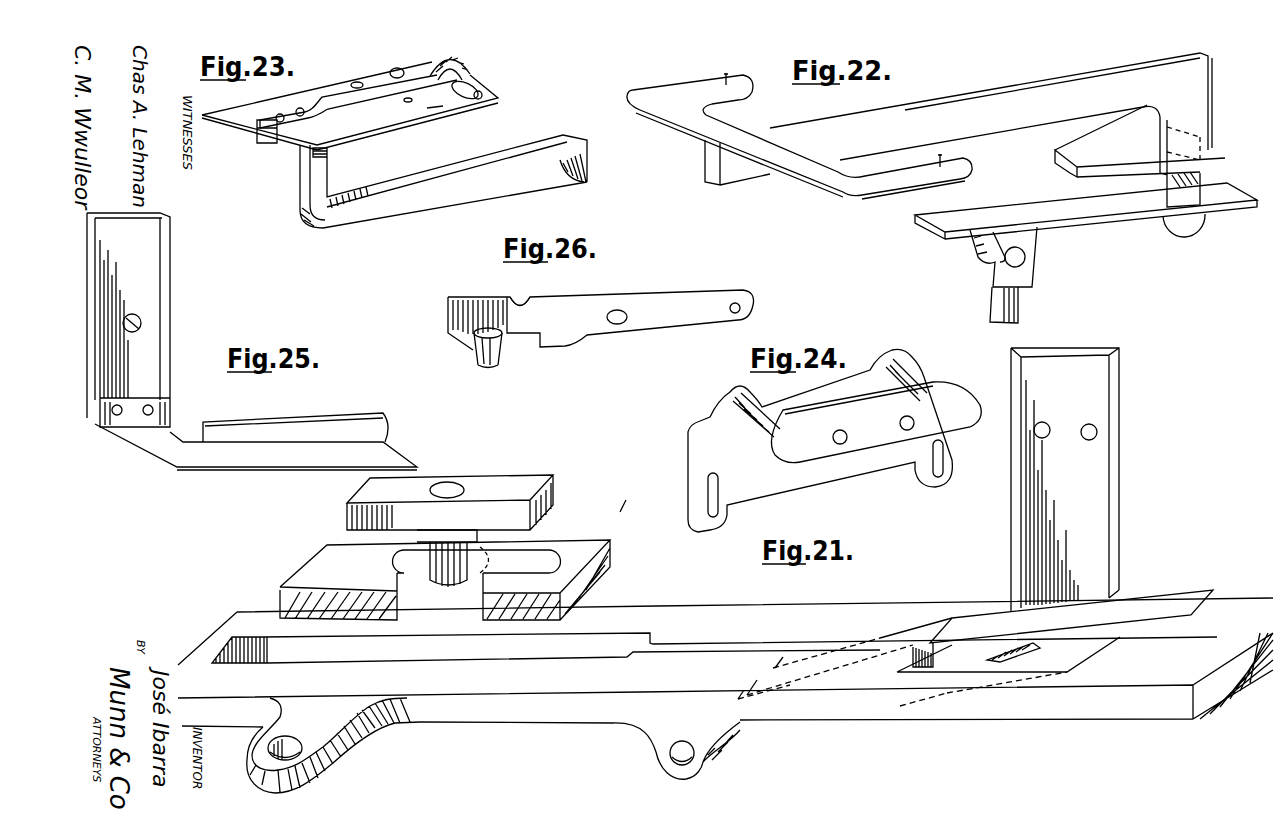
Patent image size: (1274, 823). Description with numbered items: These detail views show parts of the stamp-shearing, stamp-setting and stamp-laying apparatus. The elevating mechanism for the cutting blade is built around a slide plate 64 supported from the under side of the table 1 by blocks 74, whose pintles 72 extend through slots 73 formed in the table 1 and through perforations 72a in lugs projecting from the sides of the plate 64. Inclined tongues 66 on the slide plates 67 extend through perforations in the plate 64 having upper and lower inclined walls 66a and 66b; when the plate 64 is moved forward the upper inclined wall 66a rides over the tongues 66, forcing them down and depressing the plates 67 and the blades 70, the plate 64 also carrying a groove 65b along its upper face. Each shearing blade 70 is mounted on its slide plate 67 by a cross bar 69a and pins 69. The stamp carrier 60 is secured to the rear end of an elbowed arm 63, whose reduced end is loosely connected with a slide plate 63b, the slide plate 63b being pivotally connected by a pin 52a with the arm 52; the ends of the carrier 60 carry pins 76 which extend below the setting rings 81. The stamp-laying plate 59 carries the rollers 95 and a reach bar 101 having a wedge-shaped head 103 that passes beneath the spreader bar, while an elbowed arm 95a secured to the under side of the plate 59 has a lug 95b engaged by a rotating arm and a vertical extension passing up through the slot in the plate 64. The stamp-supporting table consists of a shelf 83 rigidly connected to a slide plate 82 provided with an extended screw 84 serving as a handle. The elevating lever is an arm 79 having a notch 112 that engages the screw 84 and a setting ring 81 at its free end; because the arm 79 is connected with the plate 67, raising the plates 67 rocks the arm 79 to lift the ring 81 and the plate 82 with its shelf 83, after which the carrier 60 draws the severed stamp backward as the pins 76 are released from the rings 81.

In FIG. 23, the plate 59 is at (242, 118).
In FIG. 23, the reach bar 101 is at (332, 97).
In FIG. 23, the wedge-shaped head 103 is at (462, 72).
In FIG. 23, the rollers 95 is at (400, 70).
In FIG. 23, the elbowed arm 95a is at (413, 200).
In FIG. 23, the lug 95b is at (578, 167).
In FIG. 22, the carrier 60 is at (746, 142).
In FIG. 22, the pins 76 is at (722, 80).
In FIG. 22, the elbowed arm 63 is at (1017, 100).
In FIG. 22, the slide plate 63b is at (1067, 197).
In FIG. 22, the arm 52 is at (1020, 306).
In FIG. 22, the pin 52a is at (993, 265).
In FIG. 25, the slide plates 82 is at (150, 298).
In FIG. 25, the screw 84 is at (143, 330).
In FIG. 25, the shelves 83 is at (383, 452).
In FIG. 26, the arms 79 is at (588, 326).
In FIG. 26, the notch 112 is at (520, 298).
In FIG. 26, the setting rings 81 is at (482, 353).
In FIG. 24, the blades 70 is at (758, 478).
In FIG. 24, the pins 69 is at (760, 427).
In FIG. 24, the cross bar 69a is at (880, 446).
In FIG. 21, the slide plate 64 is at (570, 712).
In FIG. 21, the groove 65b is at (265, 652).
In FIG. 21, the inclined tongues 66 is at (997, 617).
In FIG. 21, the upper inclined wall 66a is at (808, 675).
In FIG. 21, the lower inclined wall 66b is at (1072, 662).
In FIG. 21, the slide plates 67 is at (1103, 503).
In FIG. 21, the pintles 72 is at (427, 560).
In FIG. 21, the perforations 72a is at (297, 737).
In FIG. 21, the slots 73 is at (523, 557).
In FIG. 21, the blocks 74 is at (493, 483).
In FIG. 21, the table 1 is at (283, 557).